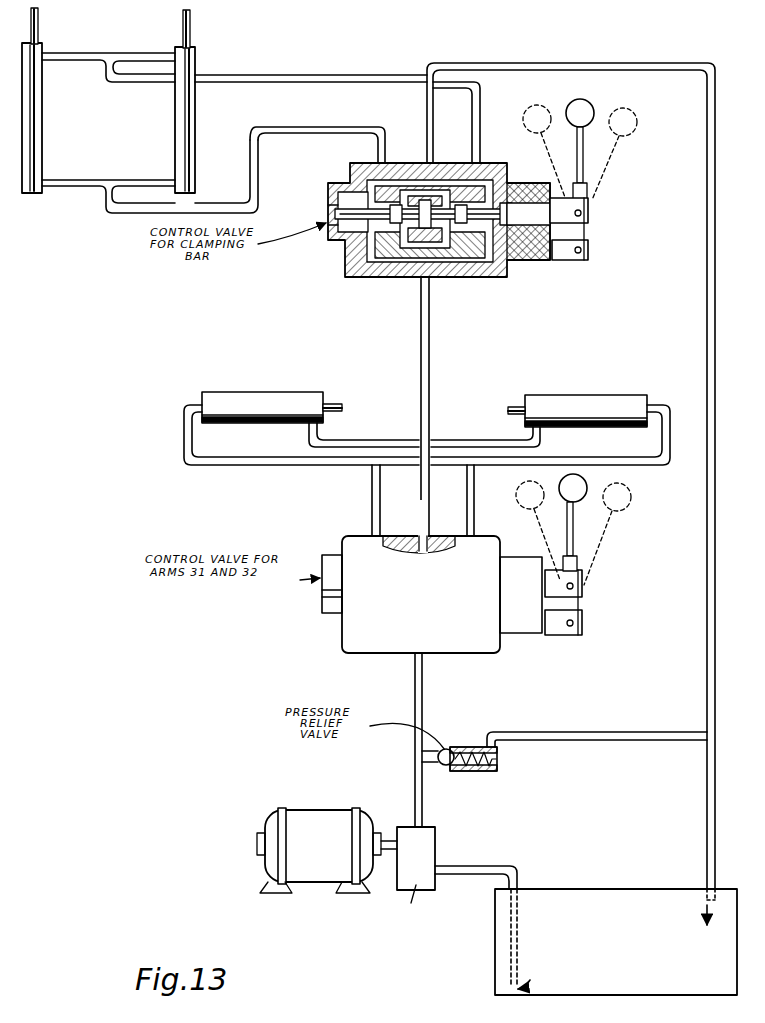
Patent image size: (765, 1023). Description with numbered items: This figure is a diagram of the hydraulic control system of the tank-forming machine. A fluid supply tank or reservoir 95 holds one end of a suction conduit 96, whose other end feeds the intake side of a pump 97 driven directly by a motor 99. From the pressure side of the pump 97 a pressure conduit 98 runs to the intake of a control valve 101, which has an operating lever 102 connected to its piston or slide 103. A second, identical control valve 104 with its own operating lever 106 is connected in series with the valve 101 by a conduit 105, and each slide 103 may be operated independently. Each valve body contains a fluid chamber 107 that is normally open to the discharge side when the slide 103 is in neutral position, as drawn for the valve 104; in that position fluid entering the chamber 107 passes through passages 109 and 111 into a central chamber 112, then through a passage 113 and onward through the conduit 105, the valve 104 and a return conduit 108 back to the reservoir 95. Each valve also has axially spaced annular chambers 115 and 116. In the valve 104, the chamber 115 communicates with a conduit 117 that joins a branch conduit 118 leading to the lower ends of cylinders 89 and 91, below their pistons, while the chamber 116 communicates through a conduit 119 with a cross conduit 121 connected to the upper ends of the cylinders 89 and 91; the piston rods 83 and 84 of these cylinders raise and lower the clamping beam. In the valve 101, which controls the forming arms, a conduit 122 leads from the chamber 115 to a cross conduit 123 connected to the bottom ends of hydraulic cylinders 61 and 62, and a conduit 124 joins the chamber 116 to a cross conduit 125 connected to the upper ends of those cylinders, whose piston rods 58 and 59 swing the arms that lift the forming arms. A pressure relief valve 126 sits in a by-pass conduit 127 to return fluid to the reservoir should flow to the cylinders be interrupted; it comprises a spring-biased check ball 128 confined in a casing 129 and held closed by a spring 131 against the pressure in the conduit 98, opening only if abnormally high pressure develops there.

The piston rod 83 is at (40, 22).
The piston rod 84 is at (192, 23).
The cylinder 89 is at (42, 128).
The cylinder 91 is at (178, 133).
The cross conduit 121 is at (96, 56).
The branch conduit 118 is at (93, 178).
The conduit 117 is at (300, 127).
The conduit 119 is at (338, 80).
The return conduit 108 is at (573, 64).
The control valve 104 is at (426, 228).
The fluid chamber 107 is at (392, 258).
The passage 109 is at (403, 176).
The passage 113 is at (434, 180).
The central chamber 112 is at (441, 188).
The passage 111 is at (470, 172).
The annular chamber 115 is at (358, 236).
The annular chamber 116 is at (498, 272).
The operating lever 106 is at (585, 158).
The piston or slide 103 is at (590, 224).
The conduit 105 is at (432, 331).
The hydraulic cylinder 61 is at (255, 392).
The piston rod 58 is at (336, 402).
The piston rod 59 is at (517, 406).
The hydraulic cylinder 62 is at (581, 400).
The cross conduit 125 is at (448, 440).
The cross conduit 123 is at (288, 466).
The conduit 122 is at (371, 507).
The conduit 124 is at (476, 516).
The control valve 101 is at (345, 652).
The operating lever 102 is at (578, 541).
The pressure conduit 98 is at (414, 788).
The motor 99 is at (304, 818).
The pump 97 is at (438, 851).
The suction conduit 96 is at (517, 866).
The reservoir 95 is at (614, 905).
The pressure relief valve 126 is at (462, 747).
The by-pass conduit 127 is at (553, 732).
The check ball 128 is at (441, 768).
The casing 129 is at (493, 775).
The spring 131 is at (498, 760).